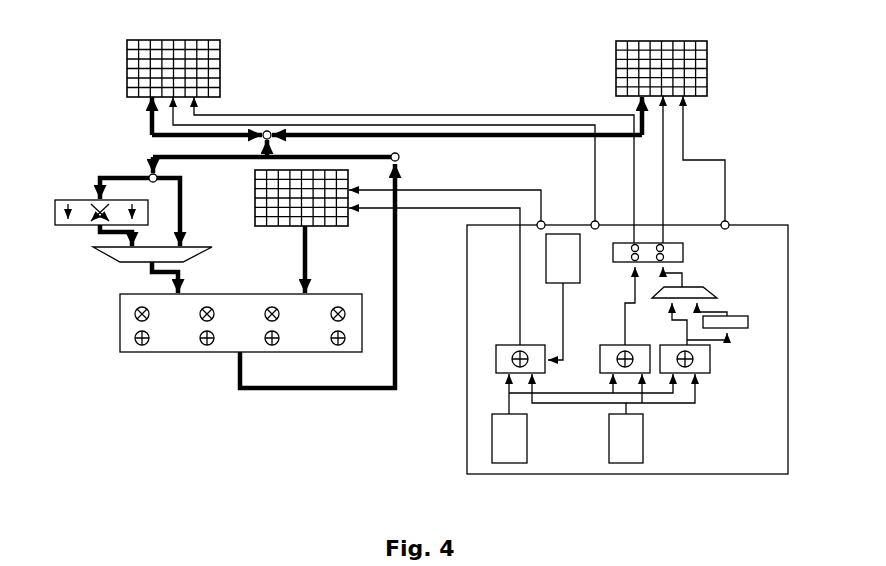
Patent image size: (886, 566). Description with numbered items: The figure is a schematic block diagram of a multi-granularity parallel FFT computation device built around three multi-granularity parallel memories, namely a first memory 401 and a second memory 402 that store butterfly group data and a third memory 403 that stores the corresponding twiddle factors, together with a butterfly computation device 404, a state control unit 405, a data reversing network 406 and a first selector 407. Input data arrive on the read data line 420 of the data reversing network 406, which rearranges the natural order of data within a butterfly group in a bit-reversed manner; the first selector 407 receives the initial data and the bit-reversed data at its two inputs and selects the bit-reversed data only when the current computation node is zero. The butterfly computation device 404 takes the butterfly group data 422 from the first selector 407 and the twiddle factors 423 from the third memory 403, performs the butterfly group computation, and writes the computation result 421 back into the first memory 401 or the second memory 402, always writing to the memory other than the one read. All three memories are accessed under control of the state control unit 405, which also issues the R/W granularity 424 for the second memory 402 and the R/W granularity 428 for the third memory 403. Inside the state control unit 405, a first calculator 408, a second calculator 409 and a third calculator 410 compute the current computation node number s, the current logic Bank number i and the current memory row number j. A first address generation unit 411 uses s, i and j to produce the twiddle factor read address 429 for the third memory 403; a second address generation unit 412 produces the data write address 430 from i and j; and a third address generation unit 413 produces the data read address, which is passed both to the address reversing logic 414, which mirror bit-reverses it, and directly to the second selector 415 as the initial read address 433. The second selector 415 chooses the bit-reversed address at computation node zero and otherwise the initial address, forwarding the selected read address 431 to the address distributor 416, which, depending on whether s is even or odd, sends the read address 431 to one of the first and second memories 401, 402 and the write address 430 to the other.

The first memory 401 is at (224, 65).
The second memory 402 is at (712, 66).
The third memory 403 is at (252, 195).
The butterfly computation device 404 is at (119, 322).
The state control unit 405 is at (466, 348).
The data reversing network 406 is at (55, 212).
The first selector 407 is at (100, 256).
The first calculator 408 is at (491, 440).
The second calculator 409 is at (608, 440).
The third calculator 410 is at (545, 260).
The first address generation unit 411 is at (496, 355).
The second address generation unit 412 is at (600, 352).
The third address generation unit 413 is at (712, 358).
The address reversing logic 414 is at (752, 322).
The second selector 415 is at (720, 294).
The address distributor 416 is at (690, 256).
The read data line 420 is at (115, 157).
The result output line 421 is at (237, 370).
The butterfly group data 422 is at (145, 272).
The twiddle factors 423 is at (300, 262).
The R/W granularity for the second memory 424 is at (735, 195).
The R/W granularity for the third memory 428 is at (489, 190).
The twiddle factor read address 429 is at (423, 205).
The data write address 430 is at (633, 293).
The selected read address 431 is at (695, 277).
The initial read address 433 is at (715, 342).